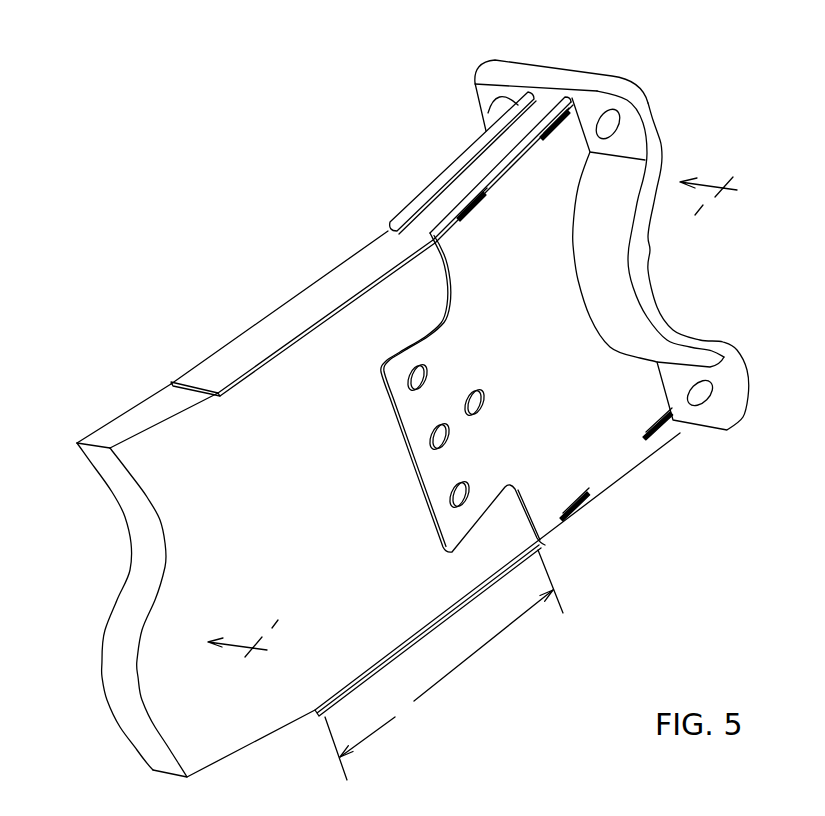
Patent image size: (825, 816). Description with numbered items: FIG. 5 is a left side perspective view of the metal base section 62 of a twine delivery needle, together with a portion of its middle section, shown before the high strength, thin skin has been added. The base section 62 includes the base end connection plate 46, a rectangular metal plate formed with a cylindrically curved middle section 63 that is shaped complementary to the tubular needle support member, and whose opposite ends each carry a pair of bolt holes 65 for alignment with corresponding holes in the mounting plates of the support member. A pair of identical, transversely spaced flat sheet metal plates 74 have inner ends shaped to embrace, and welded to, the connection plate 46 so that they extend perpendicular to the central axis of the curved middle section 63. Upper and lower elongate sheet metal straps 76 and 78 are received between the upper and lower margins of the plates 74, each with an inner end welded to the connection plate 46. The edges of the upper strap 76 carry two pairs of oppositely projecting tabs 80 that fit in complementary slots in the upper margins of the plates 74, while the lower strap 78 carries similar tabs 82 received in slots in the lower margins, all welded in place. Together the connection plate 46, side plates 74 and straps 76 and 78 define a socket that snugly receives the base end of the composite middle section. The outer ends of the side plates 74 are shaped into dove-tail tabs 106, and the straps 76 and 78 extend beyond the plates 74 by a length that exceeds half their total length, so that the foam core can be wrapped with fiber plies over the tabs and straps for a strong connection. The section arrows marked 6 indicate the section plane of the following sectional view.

The metal base section 62 is at (464, 110).
The base end connection plate 46 is at (655, 121).
The cylindrically curved middle section 63 is at (650, 279).
The bolt holes 65 is at (490, 102).
The flat sheet metal plates 74 is at (395, 200).
The upper sheet metal strap 76 is at (258, 335).
The lower sheet metal strap 78 is at (440, 633).
The oppositely projecting tabs 80 is at (545, 122).
The oppositely projecting tabs 82 is at (670, 433).
The tab 106 is at (410, 452).
The section line 6- 6 is at (478, 420).